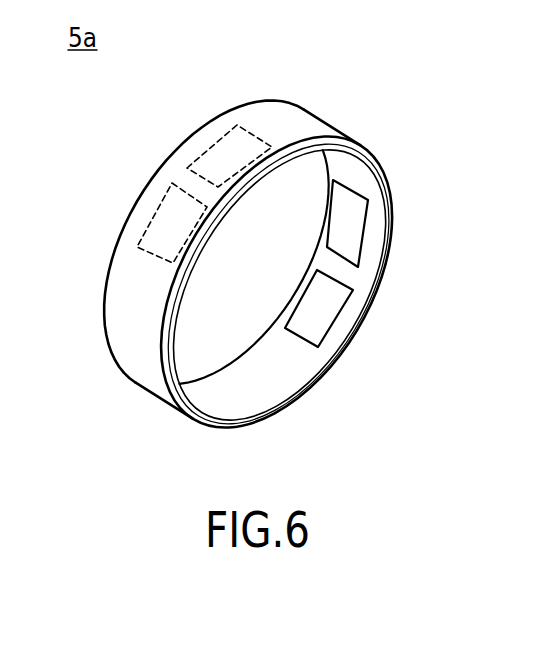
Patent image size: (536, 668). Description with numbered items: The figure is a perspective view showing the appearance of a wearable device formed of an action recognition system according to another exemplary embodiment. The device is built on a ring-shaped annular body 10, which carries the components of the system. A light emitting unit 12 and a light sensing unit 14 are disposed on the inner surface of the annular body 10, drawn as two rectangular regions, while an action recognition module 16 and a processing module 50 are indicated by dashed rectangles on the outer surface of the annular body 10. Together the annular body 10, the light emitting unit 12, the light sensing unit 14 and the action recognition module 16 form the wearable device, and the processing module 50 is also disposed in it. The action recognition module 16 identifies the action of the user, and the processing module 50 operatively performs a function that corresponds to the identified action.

The annular body 10 is at (147, 187).
The light emitting unit 12 is at (353, 226).
The light sensing unit 14 is at (320, 307).
The action recognition module 16 is at (223, 140).
The processing module 50 is at (163, 228).